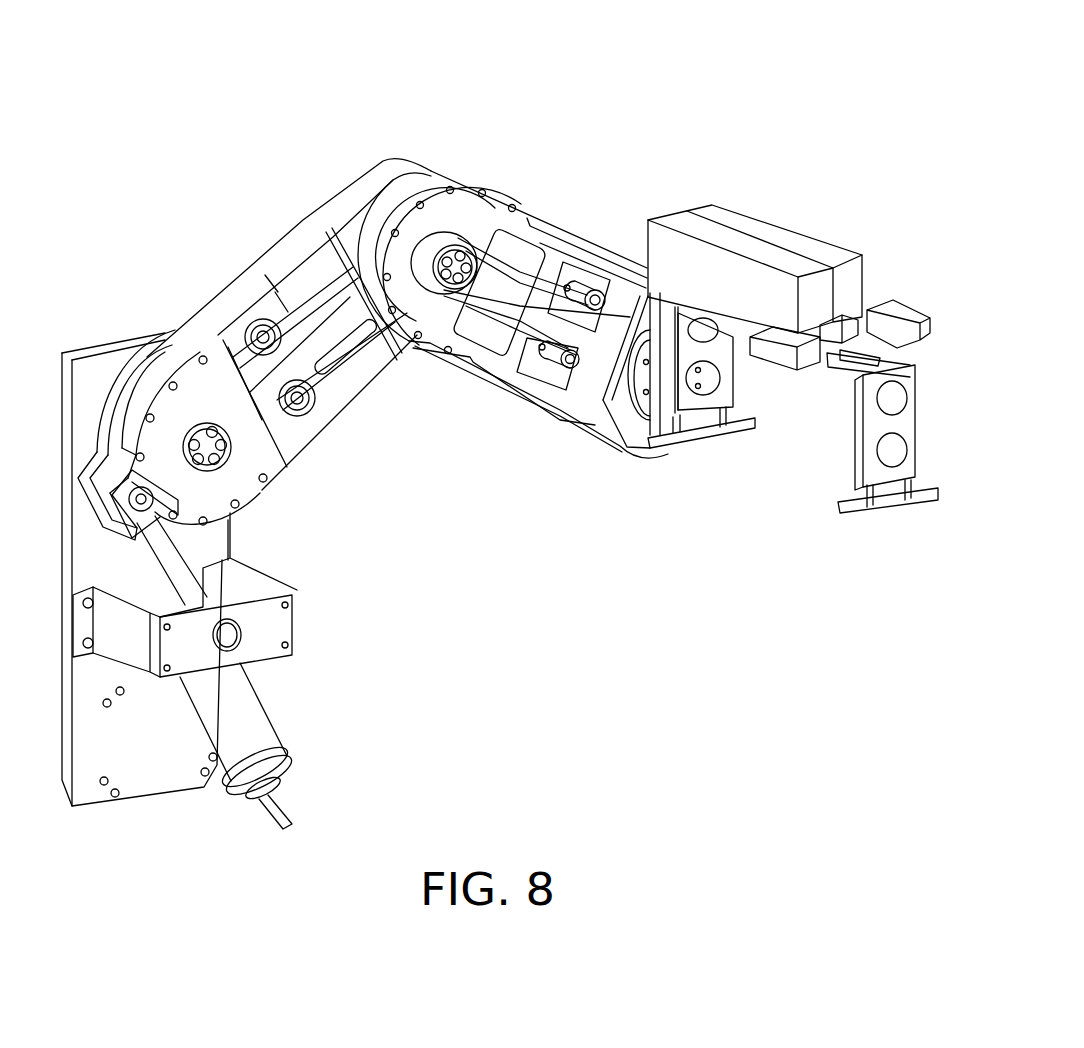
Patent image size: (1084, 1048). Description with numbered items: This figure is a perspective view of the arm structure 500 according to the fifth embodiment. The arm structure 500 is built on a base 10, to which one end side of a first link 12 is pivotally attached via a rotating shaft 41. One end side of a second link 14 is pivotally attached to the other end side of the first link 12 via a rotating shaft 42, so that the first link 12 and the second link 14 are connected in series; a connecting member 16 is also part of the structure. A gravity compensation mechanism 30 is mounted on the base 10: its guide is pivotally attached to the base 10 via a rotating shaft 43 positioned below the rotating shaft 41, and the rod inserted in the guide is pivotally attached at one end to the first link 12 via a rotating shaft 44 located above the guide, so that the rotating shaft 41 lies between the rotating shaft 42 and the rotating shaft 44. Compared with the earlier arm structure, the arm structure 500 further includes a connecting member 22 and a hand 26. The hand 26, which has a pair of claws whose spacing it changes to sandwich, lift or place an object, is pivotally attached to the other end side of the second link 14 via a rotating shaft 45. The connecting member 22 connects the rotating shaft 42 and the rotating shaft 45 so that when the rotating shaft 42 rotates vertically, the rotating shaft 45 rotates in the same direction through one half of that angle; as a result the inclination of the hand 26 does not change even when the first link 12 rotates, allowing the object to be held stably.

The base 10 is at (105, 367).
The first link 12 is at (307, 237).
The second link 14 is at (563, 245).
The connecting member 16 is at (337, 337).
The connecting member 22 is at (513, 268).
The hand 26 is at (853, 285).
The gravity compensation mechanism 30 is at (280, 708).
The rotating shaft 41 is at (215, 460).
The rotating shaft 42 is at (450, 250).
The rotating shaft 43 is at (232, 632).
The rotating shaft 44 is at (150, 500).
The rotating shaft 45 is at (648, 405).
The arm structure 500 is at (808, 100).